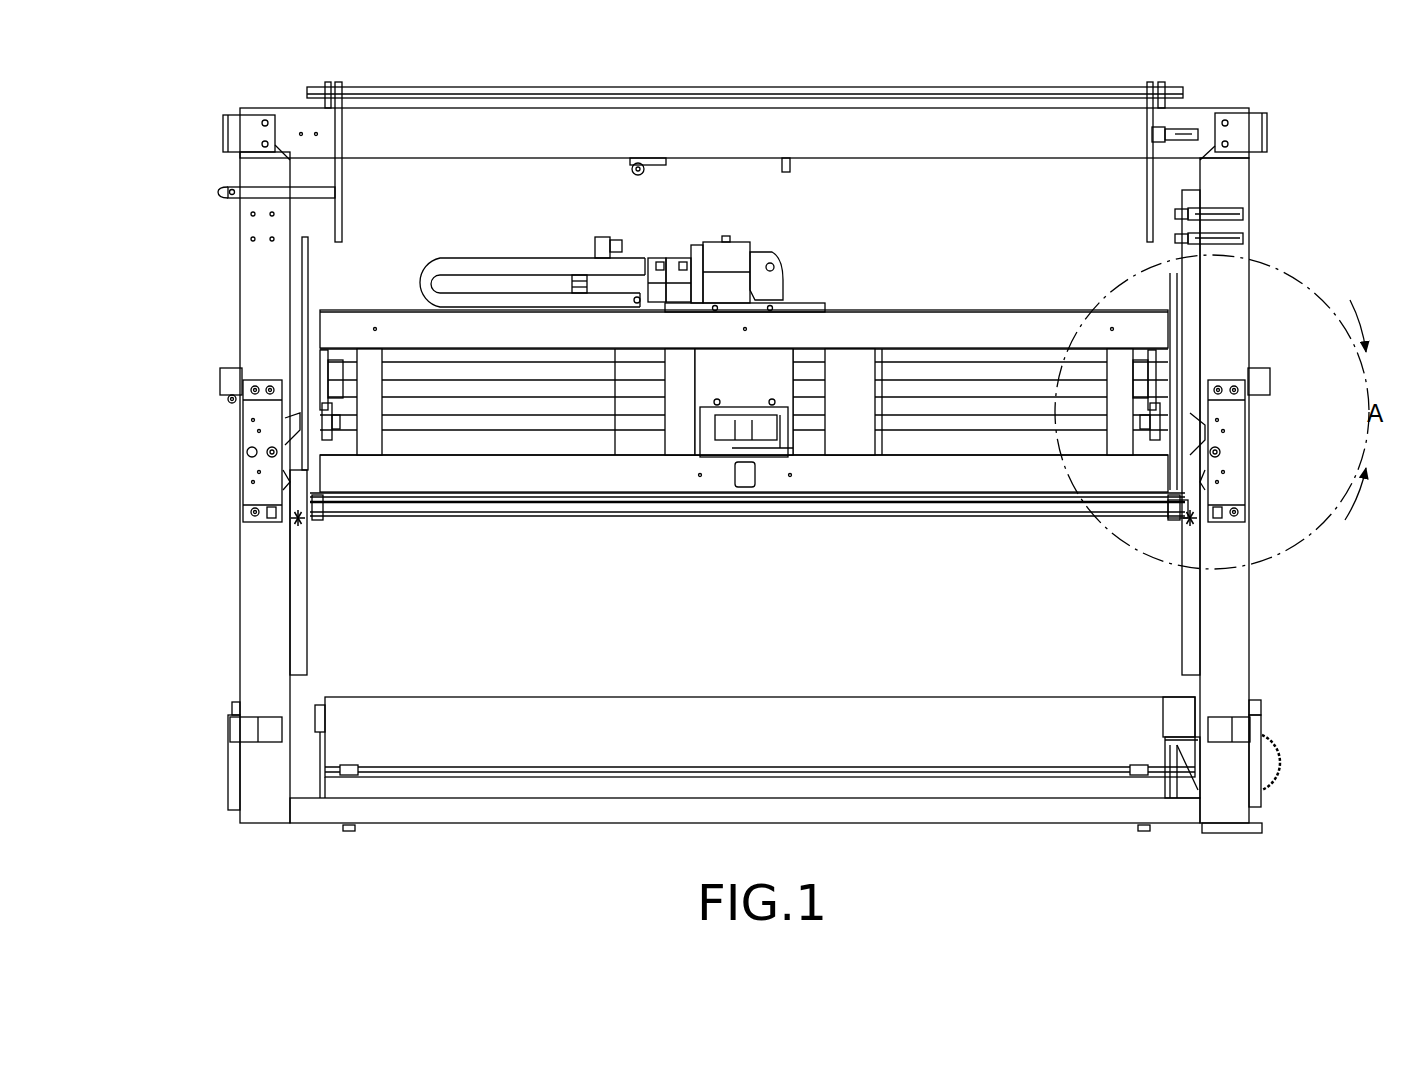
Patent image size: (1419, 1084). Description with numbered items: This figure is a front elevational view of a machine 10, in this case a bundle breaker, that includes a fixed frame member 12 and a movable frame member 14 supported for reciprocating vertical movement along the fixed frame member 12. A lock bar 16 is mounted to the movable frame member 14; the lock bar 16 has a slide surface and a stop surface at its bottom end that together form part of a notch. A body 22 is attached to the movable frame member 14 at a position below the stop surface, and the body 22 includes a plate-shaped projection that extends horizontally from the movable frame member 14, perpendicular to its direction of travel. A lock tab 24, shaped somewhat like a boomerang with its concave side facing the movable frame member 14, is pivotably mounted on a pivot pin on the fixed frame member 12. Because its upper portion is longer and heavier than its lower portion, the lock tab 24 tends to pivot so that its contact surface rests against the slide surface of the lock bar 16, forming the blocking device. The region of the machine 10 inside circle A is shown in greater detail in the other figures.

The machine 10 is at (192, 566).
The fixed frame member 12 is at (1232, 648).
The movable frame member 14 is at (1175, 480).
The lock bar 16 is at (1185, 343).
The body 22 is at (1187, 526).
The lock tab 24 is at (1198, 422).